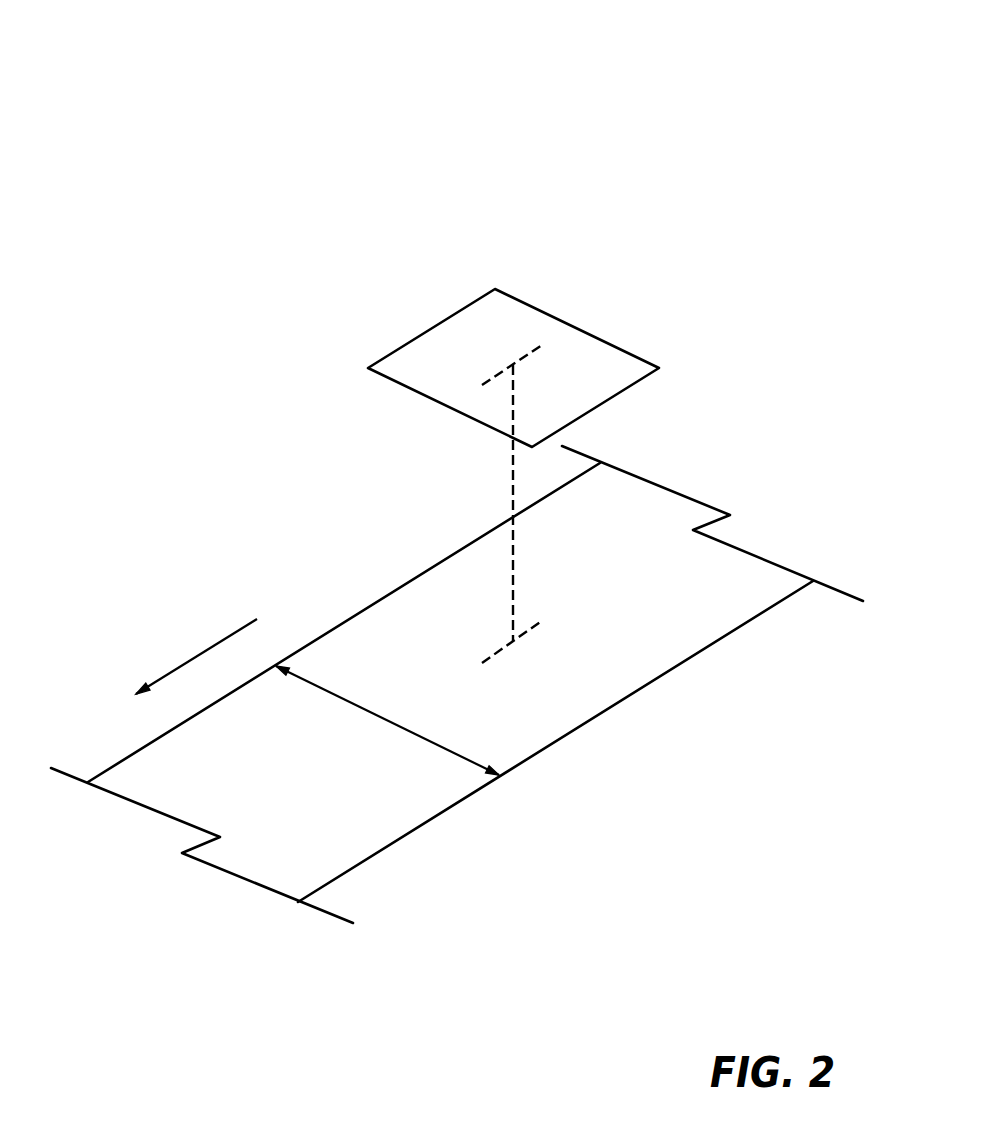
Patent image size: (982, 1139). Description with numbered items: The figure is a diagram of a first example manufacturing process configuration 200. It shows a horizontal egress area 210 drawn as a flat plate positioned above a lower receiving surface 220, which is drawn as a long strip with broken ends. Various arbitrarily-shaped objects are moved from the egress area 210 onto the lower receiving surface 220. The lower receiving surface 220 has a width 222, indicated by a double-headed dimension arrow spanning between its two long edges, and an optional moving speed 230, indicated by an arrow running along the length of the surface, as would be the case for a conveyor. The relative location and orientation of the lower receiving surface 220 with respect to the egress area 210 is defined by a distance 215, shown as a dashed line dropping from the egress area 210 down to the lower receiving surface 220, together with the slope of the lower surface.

The manufacturing process configuration 200 is at (855, 37).
The horizontal egress area 210 is at (512, 331).
The distance 215 is at (512, 497).
The lower receiving surface 220 is at (733, 597).
The width 222 is at (387, 720).
The moving speed 230 is at (196, 651).